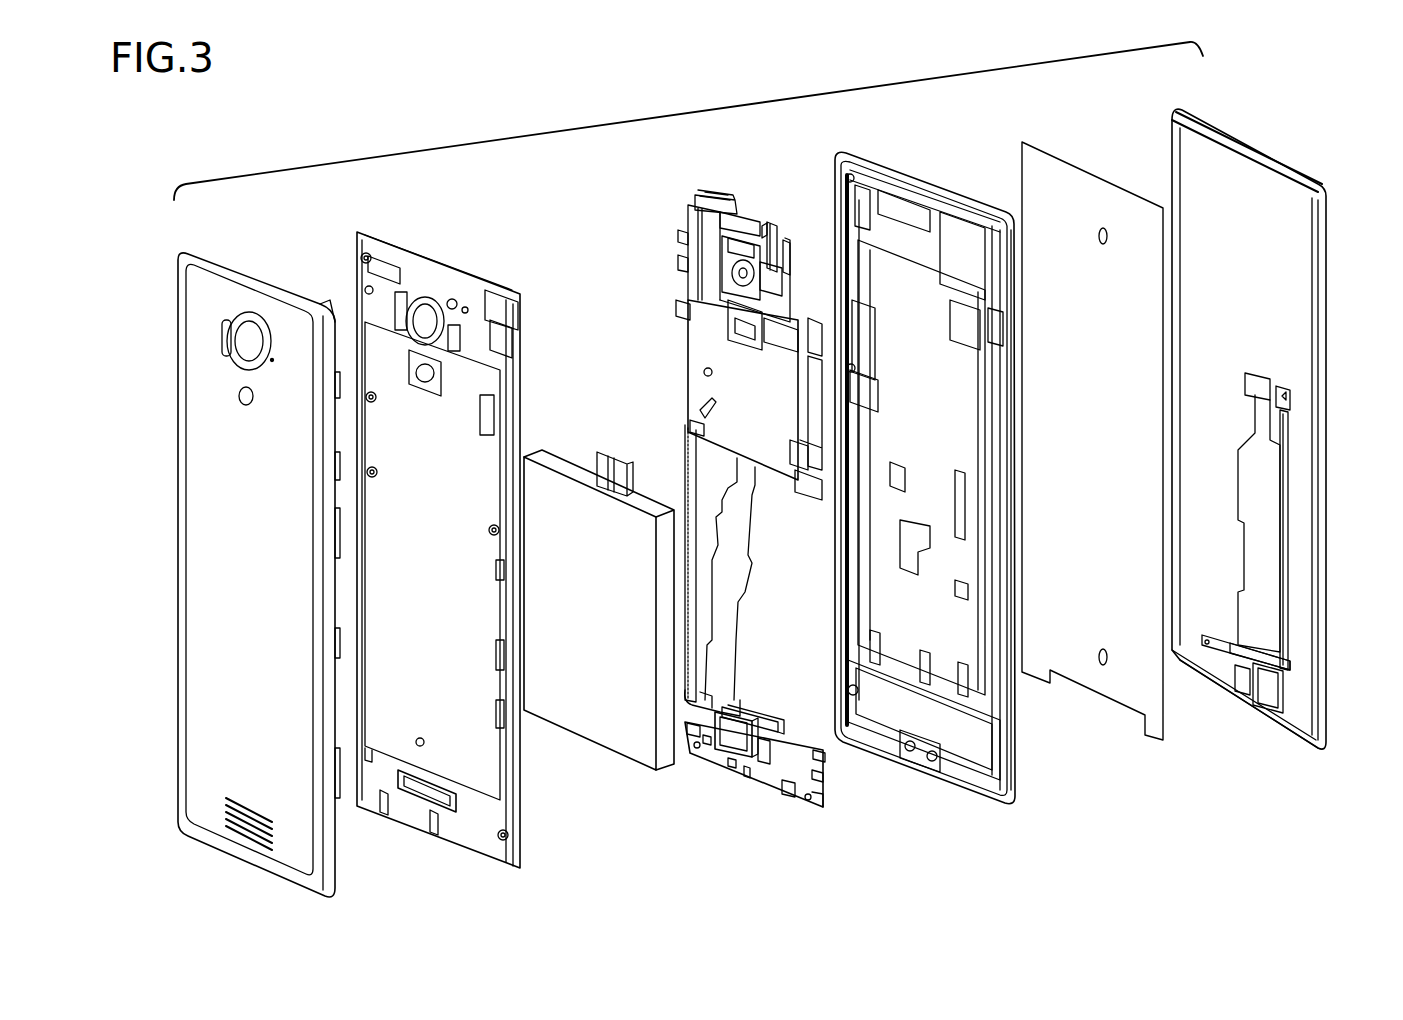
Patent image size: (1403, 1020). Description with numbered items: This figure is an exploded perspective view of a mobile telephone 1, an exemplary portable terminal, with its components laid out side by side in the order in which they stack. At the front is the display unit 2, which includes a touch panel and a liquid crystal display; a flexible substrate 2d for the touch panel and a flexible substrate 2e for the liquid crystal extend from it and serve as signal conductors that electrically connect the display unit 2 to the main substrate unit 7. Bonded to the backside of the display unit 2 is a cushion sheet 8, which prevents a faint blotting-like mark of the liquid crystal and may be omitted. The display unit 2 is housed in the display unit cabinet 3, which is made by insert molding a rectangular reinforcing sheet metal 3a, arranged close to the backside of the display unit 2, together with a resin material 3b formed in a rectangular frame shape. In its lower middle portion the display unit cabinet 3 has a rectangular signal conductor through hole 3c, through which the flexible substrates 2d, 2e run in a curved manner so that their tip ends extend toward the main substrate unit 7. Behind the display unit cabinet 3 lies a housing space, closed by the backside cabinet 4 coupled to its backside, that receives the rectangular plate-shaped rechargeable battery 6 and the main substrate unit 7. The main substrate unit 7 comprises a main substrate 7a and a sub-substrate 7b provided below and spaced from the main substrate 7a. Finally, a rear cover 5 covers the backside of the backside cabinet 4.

The mobile telephone 1 is at (683, 120).
The display unit 2 is at (1216, 146).
The flexible substrate for touch panel 2d is at (1282, 440).
The flexible substrate for liquid crystal 2e is at (1278, 612).
The display unit cabinet 3 is at (914, 178).
The reinforcing sheet metal 3a is at (962, 683).
The resin material 3b is at (1005, 752).
The signal conductor through hole 3c is at (956, 756).
The backside cabinet 4 is at (430, 280).
The rear cover 5 is at (255, 292).
The rechargeable battery 6 is at (565, 462).
The main substrate unit 7 is at (680, 386).
The main substrate 7a is at (700, 333).
The sub-substrate 7b is at (790, 750).
The cushion sheet 8 is at (1080, 186).